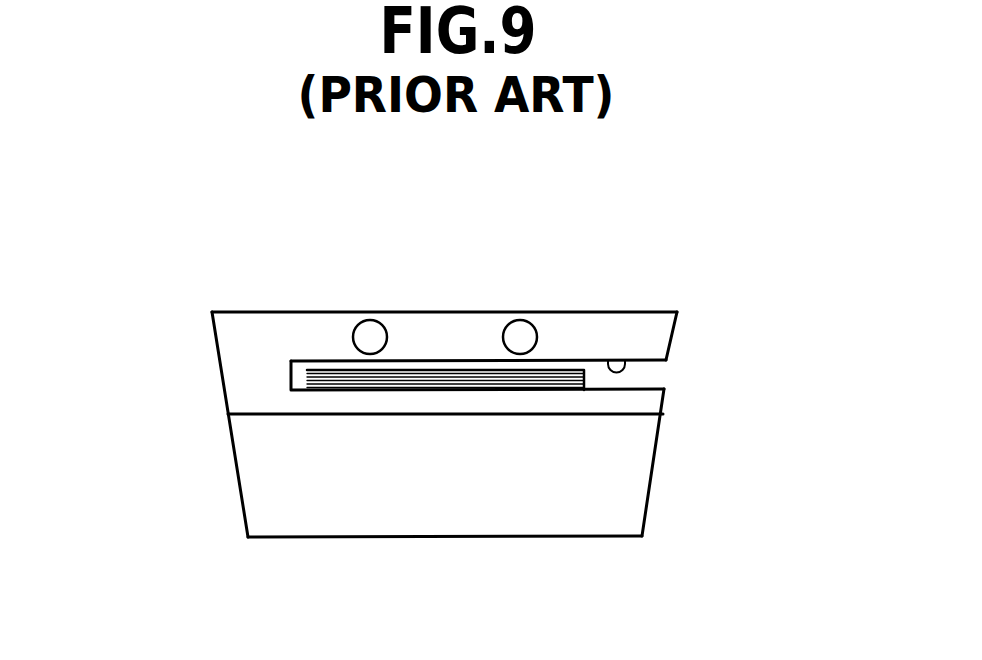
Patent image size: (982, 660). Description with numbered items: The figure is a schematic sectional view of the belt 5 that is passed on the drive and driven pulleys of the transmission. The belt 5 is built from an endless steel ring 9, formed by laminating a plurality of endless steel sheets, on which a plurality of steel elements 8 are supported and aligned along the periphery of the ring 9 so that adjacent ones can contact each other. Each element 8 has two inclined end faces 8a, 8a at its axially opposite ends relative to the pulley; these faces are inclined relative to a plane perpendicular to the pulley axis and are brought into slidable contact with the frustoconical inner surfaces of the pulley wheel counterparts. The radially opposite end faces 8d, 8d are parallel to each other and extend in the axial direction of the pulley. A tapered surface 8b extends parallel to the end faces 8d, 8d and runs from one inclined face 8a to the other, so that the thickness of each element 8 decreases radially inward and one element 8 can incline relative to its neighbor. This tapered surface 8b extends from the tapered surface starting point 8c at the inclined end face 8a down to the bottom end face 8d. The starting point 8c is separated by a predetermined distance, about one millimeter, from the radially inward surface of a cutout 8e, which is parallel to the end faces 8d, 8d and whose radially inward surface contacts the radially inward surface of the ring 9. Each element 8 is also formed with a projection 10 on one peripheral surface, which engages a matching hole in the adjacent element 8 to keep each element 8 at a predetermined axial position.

The belt 5 is at (752, 331).
The element 8 is at (247, 311).
The inclined end face 8a is at (240, 485).
The tapered surface 8b is at (406, 518).
The tapered surface starting point 8c is at (662, 413).
The radially opposite end face 8d is at (325, 312).
The cutout 8e is at (619, 362).
The ring 9 is at (587, 382).
The projection 10 is at (385, 328).